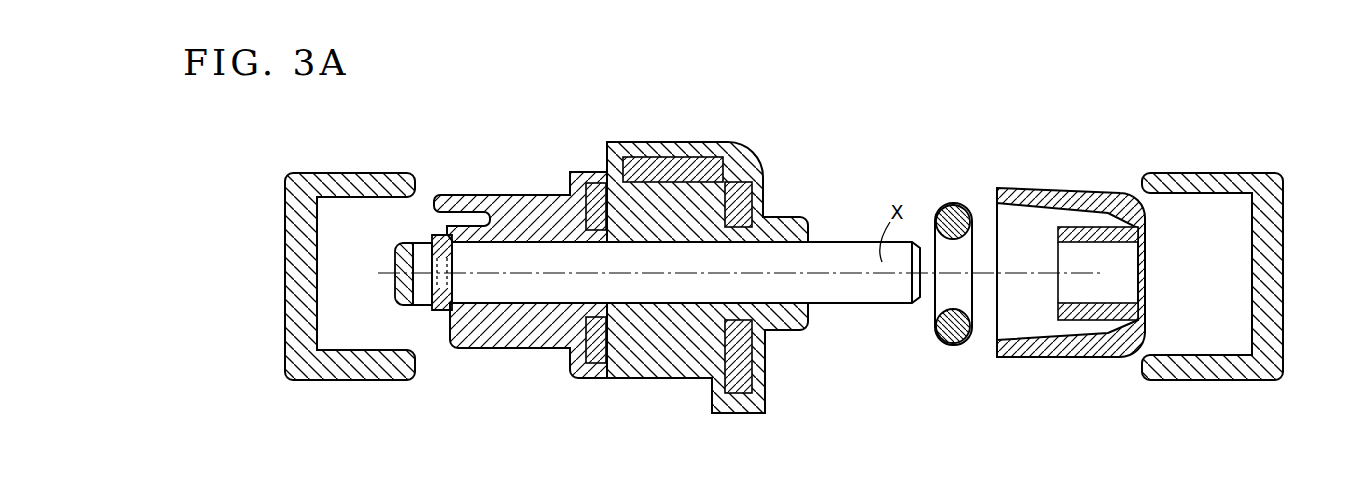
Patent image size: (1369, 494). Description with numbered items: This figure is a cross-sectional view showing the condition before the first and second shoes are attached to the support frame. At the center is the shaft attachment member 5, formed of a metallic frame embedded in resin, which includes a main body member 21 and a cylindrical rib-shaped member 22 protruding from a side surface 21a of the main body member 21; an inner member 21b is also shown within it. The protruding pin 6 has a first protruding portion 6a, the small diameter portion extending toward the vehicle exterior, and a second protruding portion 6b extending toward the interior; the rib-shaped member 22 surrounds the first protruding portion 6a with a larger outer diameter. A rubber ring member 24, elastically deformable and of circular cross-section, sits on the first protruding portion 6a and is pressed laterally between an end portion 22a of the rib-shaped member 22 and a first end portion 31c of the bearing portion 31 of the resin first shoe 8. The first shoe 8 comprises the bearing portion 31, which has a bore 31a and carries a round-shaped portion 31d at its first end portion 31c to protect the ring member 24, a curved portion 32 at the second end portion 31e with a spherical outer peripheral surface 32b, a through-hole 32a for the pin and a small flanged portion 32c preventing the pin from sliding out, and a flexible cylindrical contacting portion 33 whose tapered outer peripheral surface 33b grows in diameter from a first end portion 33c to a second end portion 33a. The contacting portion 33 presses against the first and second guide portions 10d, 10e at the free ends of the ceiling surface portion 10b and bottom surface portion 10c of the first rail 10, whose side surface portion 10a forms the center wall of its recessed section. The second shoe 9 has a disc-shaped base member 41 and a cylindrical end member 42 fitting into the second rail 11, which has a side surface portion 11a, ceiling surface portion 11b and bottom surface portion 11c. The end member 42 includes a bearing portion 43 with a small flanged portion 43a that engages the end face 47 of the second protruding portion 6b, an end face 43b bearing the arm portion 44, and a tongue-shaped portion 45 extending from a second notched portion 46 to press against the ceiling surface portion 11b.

The shaft attachment member 5 is at (713, 269).
The protruding pin 6 is at (686, 312).
The first protruding portion 6a is at (862, 305).
The second protruding portion 6b is at (497, 292).
The first shoe 8 is at (1095, 295).
The second shoe 9 is at (469, 267).
The first rail 10 is at (1278, 173).
The side surface portion 10a is at (1283, 300).
The ceiling surface portion 10b is at (1190, 175).
The bottom surface portion 10c is at (1190, 380).
The first guide portion 10d is at (1142, 183).
The second guide portion 10e is at (1148, 372).
The second rail 11 is at (287, 175).
The side surface portion 11a is at (287, 290).
The ceiling surface portion 11b is at (358, 180).
The bottom surface portion 11c is at (365, 378).
The main body member 21 is at (655, 380).
The side surface 21a is at (765, 200).
The elastic member 21b is at (607, 160).
The cylindrical rib-shaped member 22 is at (785, 332).
The end portion 22a is at (810, 222).
The ring member 24 is at (953, 330).
The bearing portion 31 is at (1078, 228).
The insert bore 31a is at (1066, 256).
The first end portion 31c is at (1062, 312).
The round-shaped portion 31d is at (1062, 235).
The second end portion 31e is at (1145, 312).
The curved portion 32 is at (1146, 218).
The through-hole 32a is at (1148, 300).
The outer peripheral surface 32b is at (1146, 330).
The small flanged portion 32c is at (1146, 245).
The contacting portion 33 is at (1055, 356).
The second end portion 33a is at (1000, 360).
The outer peripheral surface 33b is at (1040, 190).
The first end portion 33c is at (1112, 358).
The base member 41 is at (585, 368).
The end member 42 is at (543, 351).
The bearing portion 43 is at (487, 290).
The small flanged portion 43a is at (462, 256).
The end face 43b is at (458, 330).
The arm portion 44 is at (398, 268).
The tongue-shaped portion 45 is at (441, 195).
The second notched portion 46 is at (445, 220).
The end face 47 is at (438, 300).